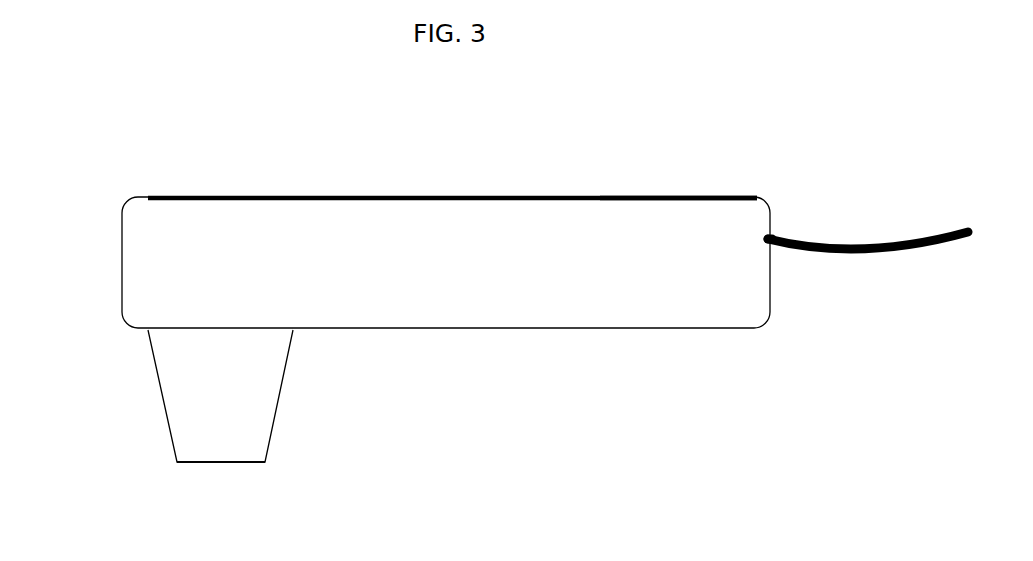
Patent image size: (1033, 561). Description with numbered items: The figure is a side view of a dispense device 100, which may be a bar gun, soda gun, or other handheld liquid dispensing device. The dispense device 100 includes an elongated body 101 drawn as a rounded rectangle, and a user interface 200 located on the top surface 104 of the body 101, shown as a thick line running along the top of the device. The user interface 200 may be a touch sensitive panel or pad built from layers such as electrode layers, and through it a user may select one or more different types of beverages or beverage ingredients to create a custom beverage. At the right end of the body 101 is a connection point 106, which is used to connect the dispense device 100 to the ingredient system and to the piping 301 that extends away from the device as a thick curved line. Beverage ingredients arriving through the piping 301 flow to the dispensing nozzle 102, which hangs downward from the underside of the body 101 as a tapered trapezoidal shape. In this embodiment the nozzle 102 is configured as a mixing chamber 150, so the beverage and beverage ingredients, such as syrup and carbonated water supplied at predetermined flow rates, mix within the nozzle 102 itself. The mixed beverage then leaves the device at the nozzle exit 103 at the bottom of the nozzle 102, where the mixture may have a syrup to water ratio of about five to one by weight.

The dispense device 100 is at (138, 217).
The user interface 200 is at (247, 202).
The body 101 is at (352, 232).
The top surface 104 is at (705, 197).
The connection point 106 is at (770, 240).
The piping 301 is at (843, 250).
The dispensing nozzle 102 is at (282, 383).
The mixing chamber 150 is at (202, 433).
The nozzle exit 103 is at (230, 462).